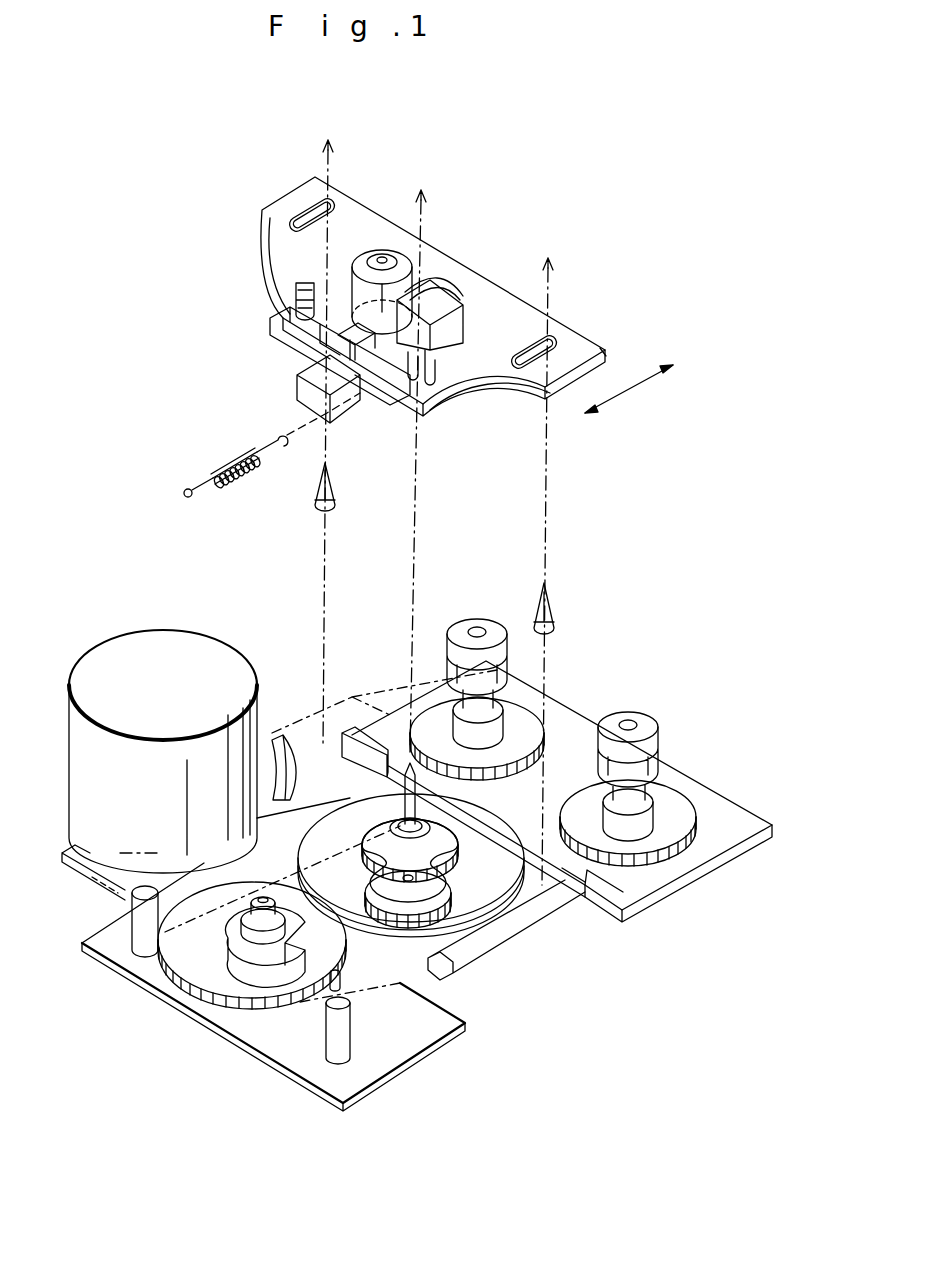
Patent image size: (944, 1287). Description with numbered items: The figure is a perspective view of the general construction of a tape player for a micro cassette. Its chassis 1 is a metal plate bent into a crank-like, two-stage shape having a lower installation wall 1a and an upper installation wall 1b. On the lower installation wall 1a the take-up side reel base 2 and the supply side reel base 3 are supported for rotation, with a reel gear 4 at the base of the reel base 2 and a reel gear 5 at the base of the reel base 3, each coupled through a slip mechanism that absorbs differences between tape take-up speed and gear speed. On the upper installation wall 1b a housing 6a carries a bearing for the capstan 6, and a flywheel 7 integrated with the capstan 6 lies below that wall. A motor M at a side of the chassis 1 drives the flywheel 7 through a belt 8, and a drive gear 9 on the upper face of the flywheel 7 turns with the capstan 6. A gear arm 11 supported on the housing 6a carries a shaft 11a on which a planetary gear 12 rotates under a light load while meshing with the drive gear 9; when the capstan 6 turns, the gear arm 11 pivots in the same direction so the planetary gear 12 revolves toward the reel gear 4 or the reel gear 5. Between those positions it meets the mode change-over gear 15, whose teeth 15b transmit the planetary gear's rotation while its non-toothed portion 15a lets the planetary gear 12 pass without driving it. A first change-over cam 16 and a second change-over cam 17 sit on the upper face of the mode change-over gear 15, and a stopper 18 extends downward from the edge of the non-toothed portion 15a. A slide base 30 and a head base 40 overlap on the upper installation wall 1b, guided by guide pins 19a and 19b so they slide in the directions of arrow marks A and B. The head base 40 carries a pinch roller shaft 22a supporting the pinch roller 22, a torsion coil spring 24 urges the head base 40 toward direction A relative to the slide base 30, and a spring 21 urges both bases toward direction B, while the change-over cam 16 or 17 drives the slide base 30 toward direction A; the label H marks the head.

The chassis 1 is at (597, 910).
The lower installation wall 1a is at (650, 878).
The upper installation wall 1b is at (506, 939).
The reel base 2 is at (478, 632).
The reel base 3 is at (643, 732).
The reel gear 4 is at (520, 732).
The reel gear 5 is at (668, 820).
The capstan 6 is at (407, 752).
The housing 6a is at (452, 832).
The flywheel 7 is at (510, 913).
The belt 8 is at (300, 790).
The drive gear 9 is at (370, 827).
The gear arm 11 is at (440, 975).
The shaft 11a is at (404, 878).
The planetary gear 12 is at (455, 925).
The mode change-over gear 15 is at (185, 957).
The non-toothed portion 15a is at (290, 1015).
The teeth 15b is at (203, 993).
The first change-over cam 16 is at (237, 933).
The second change-over cam 17 is at (283, 953).
The stopper 18 is at (392, 1015).
The guide pin 19a is at (313, 483).
The guide pin 19b is at (553, 607).
The spring 21 is at (227, 453).
The pinch roller 22 is at (398, 270).
The pinch roller shaft 22a is at (382, 262).
The torsion coil spring 24 is at (270, 345).
The slide base 30 is at (596, 378).
The head base 40 is at (490, 297).
The arrow mark A is at (639, 378).
The arrow mark B is at (581, 425).
The head H is at (447, 300).
The motor M is at (143, 643).